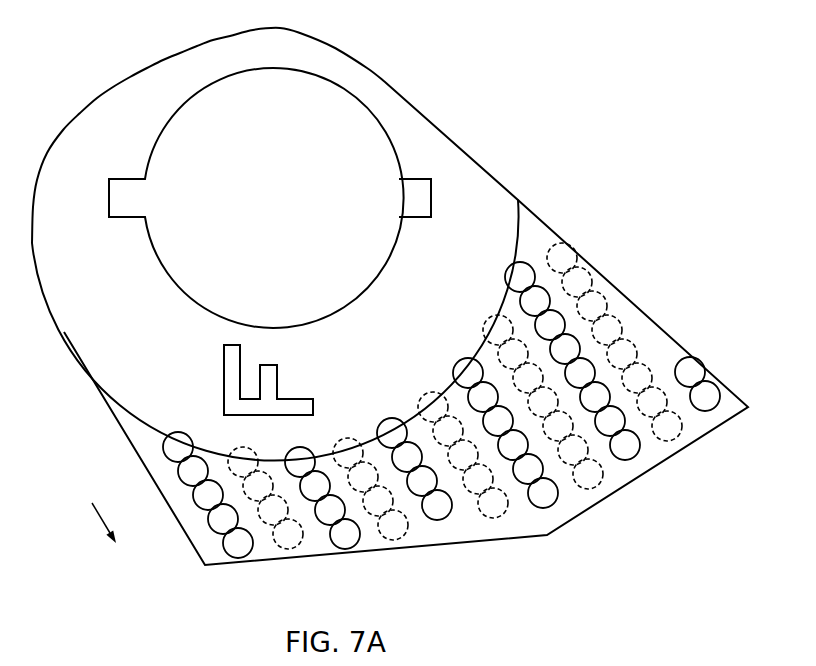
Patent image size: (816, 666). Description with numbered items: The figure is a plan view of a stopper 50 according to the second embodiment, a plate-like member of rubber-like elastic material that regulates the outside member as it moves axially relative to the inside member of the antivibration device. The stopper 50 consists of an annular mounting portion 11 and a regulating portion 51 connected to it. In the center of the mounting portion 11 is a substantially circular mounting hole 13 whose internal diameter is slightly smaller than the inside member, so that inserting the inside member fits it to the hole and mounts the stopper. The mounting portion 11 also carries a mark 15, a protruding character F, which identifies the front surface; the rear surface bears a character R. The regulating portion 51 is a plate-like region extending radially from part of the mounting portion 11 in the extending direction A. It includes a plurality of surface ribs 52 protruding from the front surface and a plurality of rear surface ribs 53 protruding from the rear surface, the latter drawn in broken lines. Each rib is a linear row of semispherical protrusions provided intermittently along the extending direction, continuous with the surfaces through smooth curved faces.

The stopper 50 is at (470, 80).
The mounting portion 11 is at (459, 170).
The mounting hole 13 is at (163, 268).
The mark 15 is at (268, 385).
The regulating portion 51 is at (515, 528).
The surface rib 52 is at (553, 503).
The rear surface rib 53 is at (397, 533).